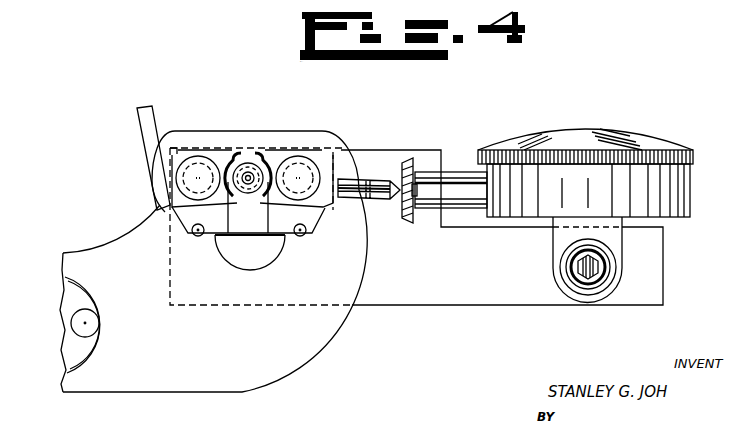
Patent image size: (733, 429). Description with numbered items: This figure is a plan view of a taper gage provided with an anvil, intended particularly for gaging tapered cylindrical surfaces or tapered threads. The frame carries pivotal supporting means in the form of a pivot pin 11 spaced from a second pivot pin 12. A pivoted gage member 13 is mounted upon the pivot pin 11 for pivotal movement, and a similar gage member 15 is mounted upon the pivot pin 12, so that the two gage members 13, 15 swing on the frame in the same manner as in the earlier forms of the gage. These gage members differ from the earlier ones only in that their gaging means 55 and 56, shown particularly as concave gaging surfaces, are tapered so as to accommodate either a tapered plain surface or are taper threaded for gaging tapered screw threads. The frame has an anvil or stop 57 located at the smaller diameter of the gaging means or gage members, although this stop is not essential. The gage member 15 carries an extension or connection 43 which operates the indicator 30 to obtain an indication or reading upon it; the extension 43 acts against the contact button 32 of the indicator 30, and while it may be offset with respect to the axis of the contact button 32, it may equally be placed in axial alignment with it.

The pivot pin 11 is at (194, 160).
The second pivot pin 12 is at (303, 158).
The pivoted gage member 13 is at (180, 150).
The gage member 15 is at (316, 160).
The indicator 30 is at (612, 133).
The contact button 32 is at (408, 160).
The extension 43 is at (368, 172).
The gaging means 55 is at (257, 152).
The gaging means 56 is at (241, 152).
The anvil or stop 57 is at (249, 135).